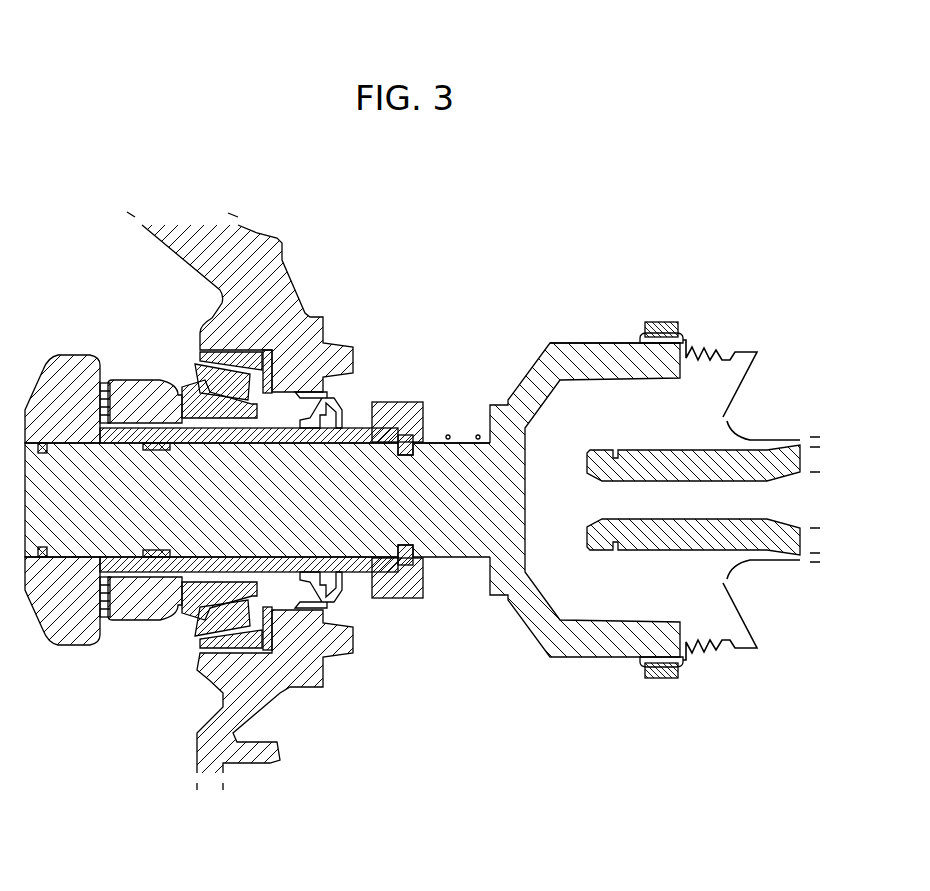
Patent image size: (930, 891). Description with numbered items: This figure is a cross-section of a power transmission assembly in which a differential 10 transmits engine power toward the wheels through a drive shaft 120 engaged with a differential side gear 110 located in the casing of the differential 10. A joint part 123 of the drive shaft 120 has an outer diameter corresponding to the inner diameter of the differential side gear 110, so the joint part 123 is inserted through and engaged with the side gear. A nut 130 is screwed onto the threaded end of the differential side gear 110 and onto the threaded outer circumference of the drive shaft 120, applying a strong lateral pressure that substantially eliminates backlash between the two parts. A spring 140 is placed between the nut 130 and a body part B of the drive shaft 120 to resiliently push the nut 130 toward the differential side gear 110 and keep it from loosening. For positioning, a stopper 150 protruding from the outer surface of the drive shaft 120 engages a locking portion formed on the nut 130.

The differential 10 is at (302, 268).
The differential side gear 110 is at (67, 647).
The joint part 123 is at (138, 512).
The nut 130 is at (395, 402).
The spring 140 is at (478, 437).
The stopper 150 is at (408, 566).
The drive shaft 120 is at (542, 663).
The body part B is at (584, 342).